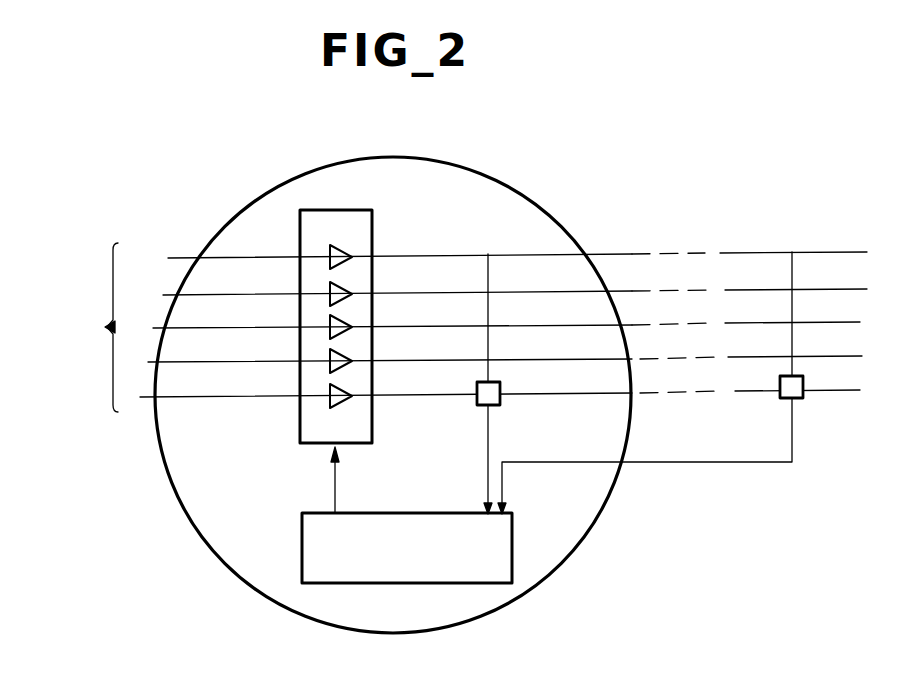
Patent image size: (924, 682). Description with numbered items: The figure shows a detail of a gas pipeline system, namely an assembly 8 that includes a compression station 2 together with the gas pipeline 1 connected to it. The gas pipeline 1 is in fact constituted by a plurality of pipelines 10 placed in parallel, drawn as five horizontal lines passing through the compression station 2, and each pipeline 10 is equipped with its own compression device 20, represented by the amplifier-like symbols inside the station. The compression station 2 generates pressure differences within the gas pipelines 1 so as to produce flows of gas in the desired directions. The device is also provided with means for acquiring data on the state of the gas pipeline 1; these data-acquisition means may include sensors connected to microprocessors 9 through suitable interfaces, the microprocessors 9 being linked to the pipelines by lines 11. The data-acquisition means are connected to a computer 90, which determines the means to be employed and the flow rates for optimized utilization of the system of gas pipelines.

The gas pipeline 1 is at (100, 327).
The compression station 2 is at (321, 207).
The assembly 8 is at (512, 184).
The microprocessor 9 is at (497, 405).
The pipeline 10 is at (262, 258).
The common line 11 is at (489, 272).
The compression device 20 is at (350, 262).
The computer 90 is at (370, 513).